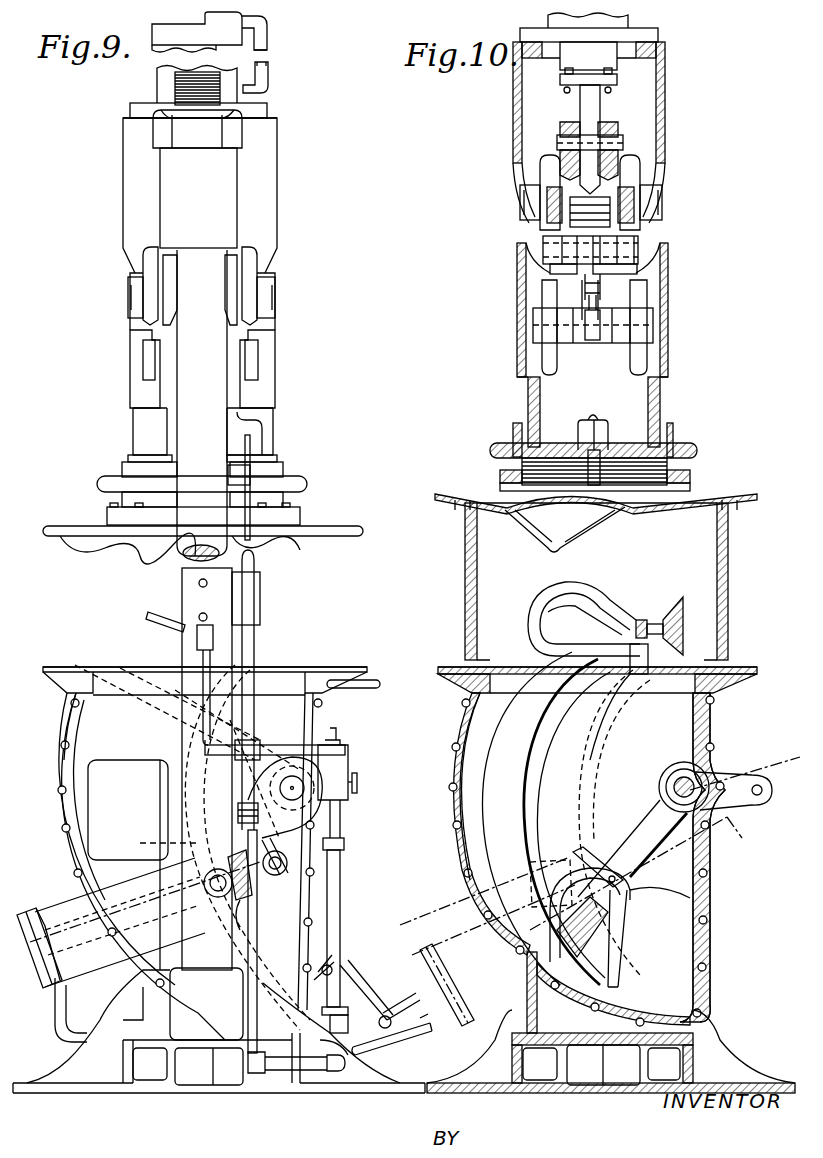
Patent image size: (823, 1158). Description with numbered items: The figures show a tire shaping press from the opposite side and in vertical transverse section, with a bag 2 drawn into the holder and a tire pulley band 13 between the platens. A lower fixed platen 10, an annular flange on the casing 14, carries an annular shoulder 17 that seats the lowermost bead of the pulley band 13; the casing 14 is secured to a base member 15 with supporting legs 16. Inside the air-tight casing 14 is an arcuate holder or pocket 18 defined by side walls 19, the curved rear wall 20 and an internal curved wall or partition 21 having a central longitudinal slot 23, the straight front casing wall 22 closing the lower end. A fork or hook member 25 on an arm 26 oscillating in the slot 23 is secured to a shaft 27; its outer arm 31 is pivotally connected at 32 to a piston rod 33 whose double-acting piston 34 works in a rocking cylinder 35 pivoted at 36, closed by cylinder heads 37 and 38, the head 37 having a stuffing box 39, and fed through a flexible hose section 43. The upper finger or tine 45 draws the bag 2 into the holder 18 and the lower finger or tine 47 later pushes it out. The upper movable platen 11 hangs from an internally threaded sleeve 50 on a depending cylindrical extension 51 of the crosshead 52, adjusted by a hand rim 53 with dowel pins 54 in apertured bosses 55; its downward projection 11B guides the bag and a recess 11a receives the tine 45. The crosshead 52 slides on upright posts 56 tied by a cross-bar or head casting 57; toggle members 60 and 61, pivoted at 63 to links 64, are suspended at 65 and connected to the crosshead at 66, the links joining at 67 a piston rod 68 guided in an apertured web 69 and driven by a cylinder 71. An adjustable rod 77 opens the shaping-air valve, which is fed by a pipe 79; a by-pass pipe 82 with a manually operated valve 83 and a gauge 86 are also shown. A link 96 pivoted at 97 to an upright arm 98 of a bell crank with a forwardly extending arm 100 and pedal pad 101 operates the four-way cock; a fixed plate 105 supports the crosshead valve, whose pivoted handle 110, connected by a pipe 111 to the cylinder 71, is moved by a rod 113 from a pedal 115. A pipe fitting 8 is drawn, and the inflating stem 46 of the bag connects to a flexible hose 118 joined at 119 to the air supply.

In FIG. 10, the bag 2 is at (559, 822).
In FIG. 9, the pipe fitting 8 is at (355, 1048).
In FIG. 9, the lower fixed platen 10 is at (205, 682).
In FIG. 10, the lower fixed platen 10 is at (466, 667).
In FIG. 9, the upper movable platen 11 is at (78, 540).
In FIG. 10, the upper movable platen 11 is at (452, 504).
In FIG. 10, the clearance space or recess 11a is at (612, 522).
In FIG. 10, the downward projection 11B is at (585, 545).
In FIG. 10, the pulley band 13 is at (465, 583).
In FIG. 9, the casing 14 is at (52, 736).
In FIG. 10, the casing 14 is at (456, 736).
In FIG. 9, the base member 15 is at (239, 1066).
In FIG. 10, the base member 15 is at (601, 1065).
In FIG. 9, the supporting legs 16 is at (75, 1065).
In FIG. 10, the supporting legs 16 is at (488, 1095).
In FIG. 9, the annular shoulder 17 is at (310, 667).
In FIG. 10, the annular shoulder 17 is at (498, 668).
In FIG. 9, the arcuate holder or pocket 18 is at (90, 752).
In FIG. 10, the arcuate holder or pocket 18 is at (480, 785).
In FIG. 9, the side walls 19 is at (128, 852).
In FIG. 10, the side walls 19 is at (660, 920).
In FIG. 9, the curved rear wall 20 is at (62, 808).
In FIG. 10, the curved rear wall 20 is at (462, 850).
In FIG. 9, the internal curved wall or partition 21 is at (187, 780).
In FIG. 10, the internal curved wall or partition 21 is at (585, 777).
In FIG. 9, the straight front casing wall 22 is at (320, 845).
In FIG. 10, the straight front casing wall 22 is at (710, 890).
In FIG. 9, the central longitudinal slot 23 is at (195, 835).
In FIG. 10, the central longitudinal slot 23 is at (585, 805).
In FIG. 9, the fork or hook member 25 is at (240, 665).
In FIG. 10, the fork or hook member 25 is at (578, 853).
In FIG. 9, the arm 26 is at (255, 730).
In FIG. 10, the arm 26 is at (632, 848).
In FIG. 9, the shaft 27 is at (292, 775).
In FIG. 10, the shaft 27 is at (684, 777).
In FIG. 9, the arm 31 is at (318, 870).
In FIG. 10, the arm 31 is at (745, 770).
In FIG. 9, the pivot connection 32 is at (277, 851).
In FIG. 9, the piston rod 33 is at (245, 888).
In FIG. 10, the piston rod 33 is at (647, 873).
In FIG. 9, the double-acting piston 34 is at (37, 907).
In FIG. 9, the rocking cylinder 35 is at (145, 922).
In FIG. 10, the rocking cylinder 35 is at (452, 945).
In FIG. 9, the pivotal support 36 is at (222, 912).
In FIG. 10, the pivotal support 36 is at (612, 908).
In FIG. 9, the cylinder head 37 is at (170, 838).
In FIG. 9, the cylinder head 38 is at (40, 978).
In FIG. 10, the cylinder head 38 is at (430, 950).
In FIG. 9, the stuffing box 39 is at (243, 918).
In FIG. 9, the flexible hose section 43 is at (66, 1030).
In FIG. 9, the upper finger or tine 45 is at (175, 614).
In FIG. 10, the upper finger or tine 45 is at (547, 947).
In FIG. 10, the inflating stem 46 is at (650, 615).
In FIG. 9, the lower finger or tine 47 is at (148, 658).
In FIG. 10, the lower finger or tine 47 is at (610, 978).
In FIG. 9, the internally threaded sleeve 50 is at (278, 513).
In FIG. 10, the internally threaded sleeve 50 is at (522, 474).
In FIG. 9, the depending cylindrical extension 51 is at (262, 422).
In FIG. 10, the depending cylindrical extension 51 is at (528, 406).
In FIG. 9, the crosshead 52 is at (130, 395).
In FIG. 10, the crosshead 52 is at (517, 358).
In FIG. 9, the hand rim 53 is at (97, 484).
In FIG. 10, the hand rim 53 is at (492, 458).
In FIG. 10, the dowel pins 54 is at (600, 468).
In FIG. 10, the apertured bosses 55 is at (580, 446).
In FIG. 9, the upright posts 56 is at (202, 405).
In FIG. 9, the cross-bar or head casting 57 is at (200, 195).
In FIG. 10, the cross-bar or head casting 57 is at (513, 124).
In FIG. 10, the toggle member 60 is at (595, 282).
In FIG. 10, the toggle member 61 is at (600, 340).
In FIG. 10, the pivot 63 is at (543, 245).
In FIG. 10, the links 64 is at (576, 125).
In FIG. 9, the pivotal suspension 65 is at (128, 298).
In FIG. 10, the pivotal suspension 65 is at (520, 205).
In FIG. 9, the pivotal connection 66 is at (143, 360).
In FIG. 10, the pivotal connection 66 is at (566, 345).
In FIG. 10, the joint connection 67 is at (557, 145).
In FIG. 10, the piston rod 68 is at (595, 108).
In FIG. 10, the apertured web 69 is at (517, 292).
In FIG. 9, the cylinder 71 is at (157, 80).
In FIG. 10, the cylinder 71 is at (630, 18).
In FIG. 9, the adjustable rod 77 is at (252, 447).
In FIG. 9, the pipe 79 is at (257, 963).
In FIG. 9, the by-pass pipe 82 is at (341, 900).
In FIG. 9, the manually operated valve 83 is at (348, 798).
In FIG. 9, the gauge 86 is at (197, 645).
In FIG. 9, the link 96 is at (328, 958).
In FIG. 9, the pivotal connection 97 is at (332, 965).
In FIG. 9, the upright arm 98 is at (312, 990).
In FIG. 9, the forwardly extending arm 100 is at (392, 1050).
In FIG. 9, the pedal pad 101 is at (410, 1032).
In FIG. 9, the fixed plate 105 is at (345, 745).
In FIG. 9, the pivoted handle 110 is at (352, 688).
In FIG. 9, the pipe 111 is at (268, 45).
In FIG. 9, the rod 113 is at (352, 998).
In FIG. 9, the pedal 115 is at (402, 1012).
In FIG. 10, the flexible hose 118 is at (553, 600).
In FIG. 10, the connection 119 is at (630, 680).